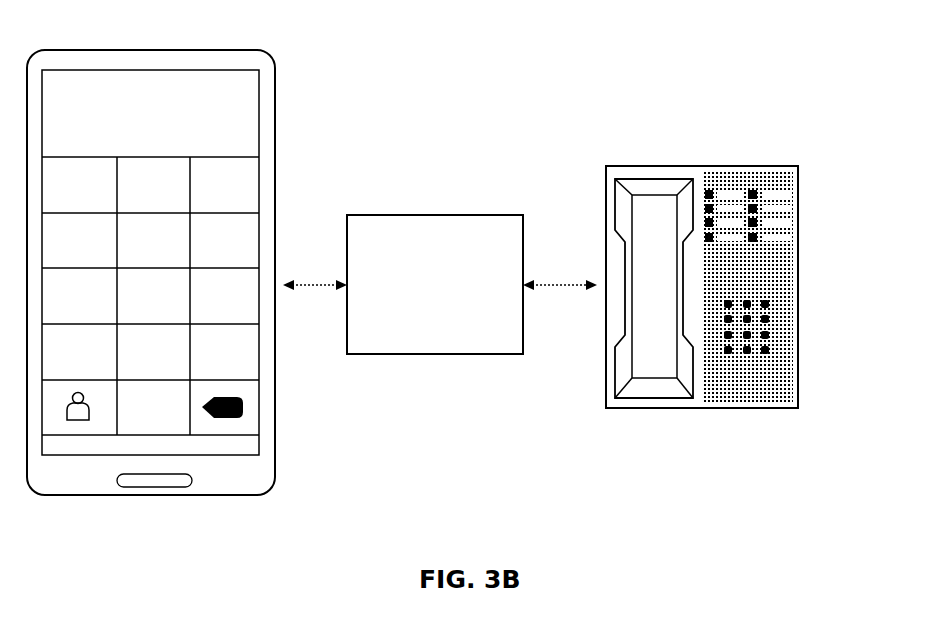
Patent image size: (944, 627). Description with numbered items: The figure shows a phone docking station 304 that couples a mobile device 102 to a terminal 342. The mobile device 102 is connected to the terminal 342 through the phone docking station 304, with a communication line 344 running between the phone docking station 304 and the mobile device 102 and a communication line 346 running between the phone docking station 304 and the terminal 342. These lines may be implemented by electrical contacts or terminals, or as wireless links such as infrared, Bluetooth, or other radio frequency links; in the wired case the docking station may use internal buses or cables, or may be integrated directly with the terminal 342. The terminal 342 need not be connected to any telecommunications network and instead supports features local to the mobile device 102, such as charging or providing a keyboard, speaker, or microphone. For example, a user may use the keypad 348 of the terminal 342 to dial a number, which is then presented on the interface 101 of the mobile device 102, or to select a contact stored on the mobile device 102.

The mobile device 102 is at (180, 50).
The interface 101 is at (247, 145).
The communication line 344 is at (311, 285).
The communication line 346 is at (558, 285).
The phone docking station 304 is at (435, 284).
The terminal 342 is at (800, 212).
The keypad 348 is at (772, 343).